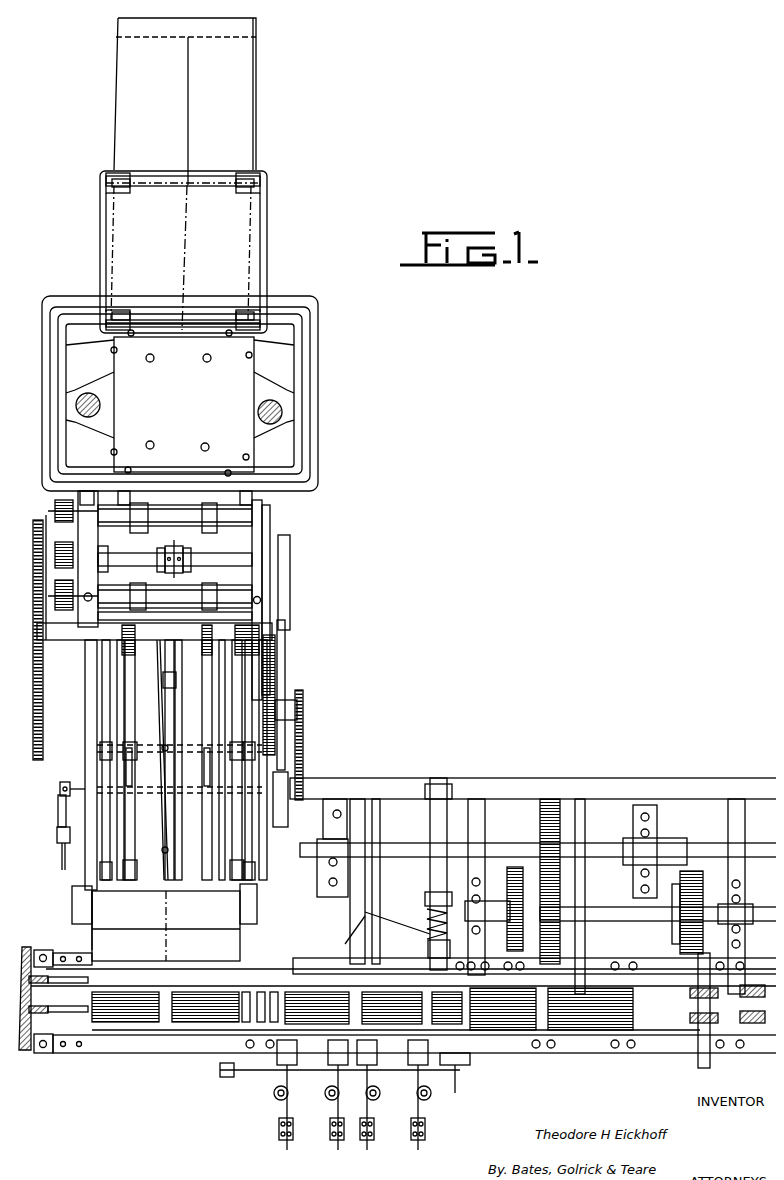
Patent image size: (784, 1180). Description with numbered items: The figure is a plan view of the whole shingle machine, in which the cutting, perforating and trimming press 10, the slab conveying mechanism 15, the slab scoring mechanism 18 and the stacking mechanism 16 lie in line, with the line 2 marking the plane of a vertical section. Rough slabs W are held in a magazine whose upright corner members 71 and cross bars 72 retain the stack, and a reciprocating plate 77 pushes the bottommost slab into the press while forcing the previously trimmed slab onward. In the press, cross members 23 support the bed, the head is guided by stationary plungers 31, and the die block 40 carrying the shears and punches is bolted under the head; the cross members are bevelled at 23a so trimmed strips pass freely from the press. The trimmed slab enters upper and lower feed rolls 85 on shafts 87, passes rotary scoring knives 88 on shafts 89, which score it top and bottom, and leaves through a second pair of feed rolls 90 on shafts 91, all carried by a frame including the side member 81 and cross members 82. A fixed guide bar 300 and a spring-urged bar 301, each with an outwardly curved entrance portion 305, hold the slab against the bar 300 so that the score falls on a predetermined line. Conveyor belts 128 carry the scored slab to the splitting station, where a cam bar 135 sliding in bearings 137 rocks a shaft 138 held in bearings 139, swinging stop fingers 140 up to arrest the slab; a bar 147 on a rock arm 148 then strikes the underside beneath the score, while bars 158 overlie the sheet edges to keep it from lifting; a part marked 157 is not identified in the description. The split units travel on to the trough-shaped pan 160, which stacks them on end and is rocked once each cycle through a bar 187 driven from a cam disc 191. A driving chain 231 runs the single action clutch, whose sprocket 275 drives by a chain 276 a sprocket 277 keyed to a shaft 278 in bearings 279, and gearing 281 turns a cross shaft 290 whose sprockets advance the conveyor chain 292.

The section line 2 is at (207, 75).
The cutting, perforating and trimming mechanism 10 is at (225, 375).
The slab conveying mechanism 15 is at (240, 137).
The stacking mechanism 16 is at (190, 926).
The slab scoring mechanism 18 is at (252, 557).
The cross members 23 is at (312, 355).
The bevelled upper surfaces 23a is at (296, 375).
The stationary plungers 31 is at (100, 405).
The die block 40 is at (182, 406).
The upright corner members 71 is at (106, 185).
The cross bars 72 is at (226, 180).
The plate 77 is at (185, 94).
The side frame member 81 is at (154, 690).
The cross members 82 is at (252, 583).
The feed rolls 85 is at (208, 533).
The shafts 87 is at (252, 515).
The scoring knives 88 is at (165, 548).
The shafts 89 is at (192, 563).
The feed rolls 90 is at (167, 565).
The shafts 91 is at (252, 603).
The conveyor belts 128 is at (190, 752).
The cam bar 135 is at (62, 870).
The bearings 137 is at (57, 843).
The shaft 138 is at (166, 790).
The bearings 139 is at (80, 793).
The stop fingers 140 is at (128, 770).
The bar 147 is at (200, 760).
The rock arm 148 is at (182, 686).
The slide bar 157 is at (112, 683).
The hold-down bars 158 is at (168, 750).
The trough-shaped pan 160 is at (164, 922).
The bar 187 is at (285, 650).
The cam disc 191 is at (290, 540).
The driving chain 231 is at (36, 740).
The sprocket 275 is at (297, 708).
The chain 276 is at (305, 742).
The sprocket 277 is at (524, 884).
The shaft 278 is at (410, 845).
The bearings 279 is at (332, 817).
The gearing 281 is at (683, 847).
The cross shaft 290 is at (700, 1043).
The conveyor chain 292 is at (92, 994).
The guide bar 300 is at (90, 491).
The guide bar 301 is at (270, 568).
The outwardly curved portion 305 is at (125, 491).
The slab W is at (245, 231).